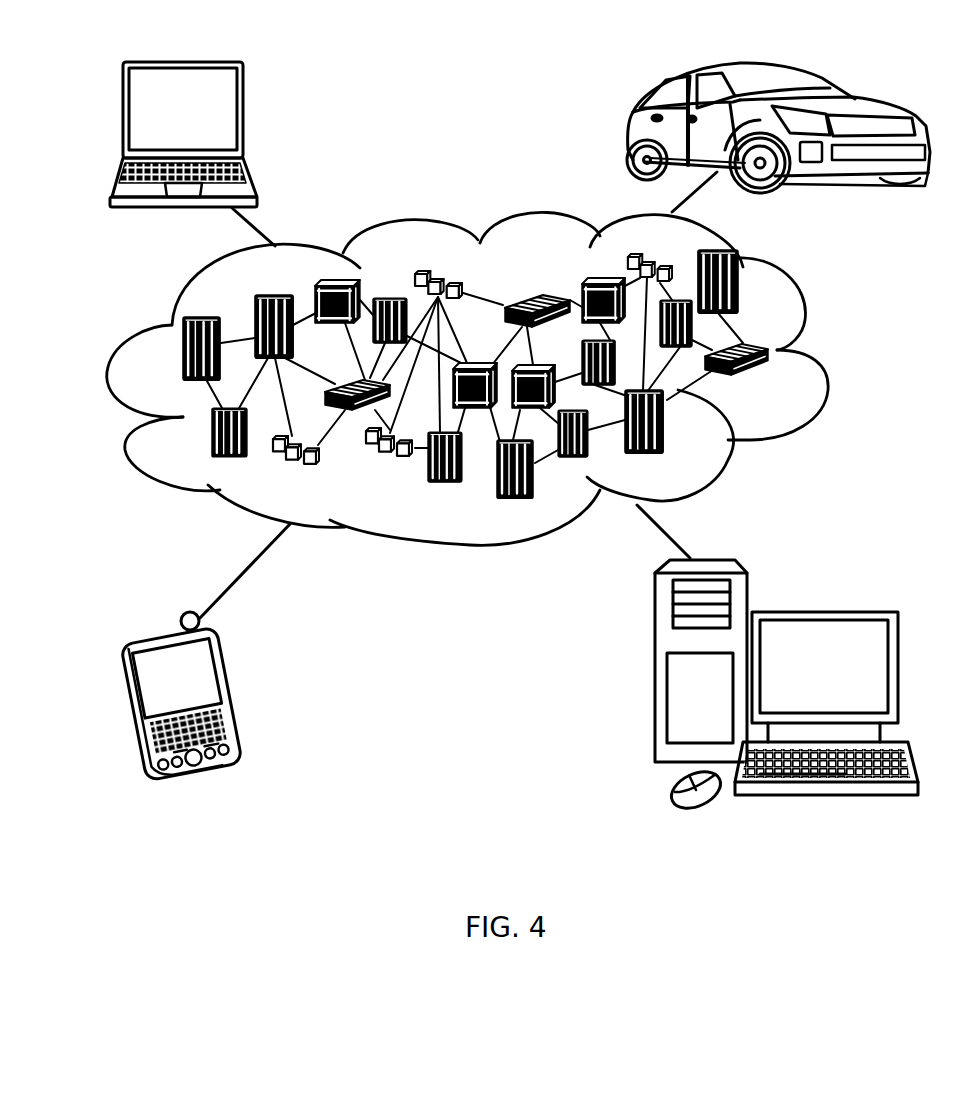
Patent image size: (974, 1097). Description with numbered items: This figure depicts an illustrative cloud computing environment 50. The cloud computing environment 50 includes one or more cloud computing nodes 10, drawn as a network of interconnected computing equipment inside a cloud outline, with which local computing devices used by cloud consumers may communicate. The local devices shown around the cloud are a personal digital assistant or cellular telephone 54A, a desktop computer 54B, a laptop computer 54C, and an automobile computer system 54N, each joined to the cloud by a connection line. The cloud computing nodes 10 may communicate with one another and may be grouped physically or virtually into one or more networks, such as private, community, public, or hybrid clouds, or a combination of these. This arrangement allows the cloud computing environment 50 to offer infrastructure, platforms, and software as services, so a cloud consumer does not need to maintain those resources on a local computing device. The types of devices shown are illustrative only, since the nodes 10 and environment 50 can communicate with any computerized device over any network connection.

The cloud computing environment 50 is at (823, 355).
The cloud computing nodes 10 is at (776, 385).
The personal digital assistant or cellular telephone 54A is at (235, 694).
The desktop computer 54B is at (822, 612).
The laptop computer 54C is at (245, 116).
The automobile computer system 54N is at (631, 128).